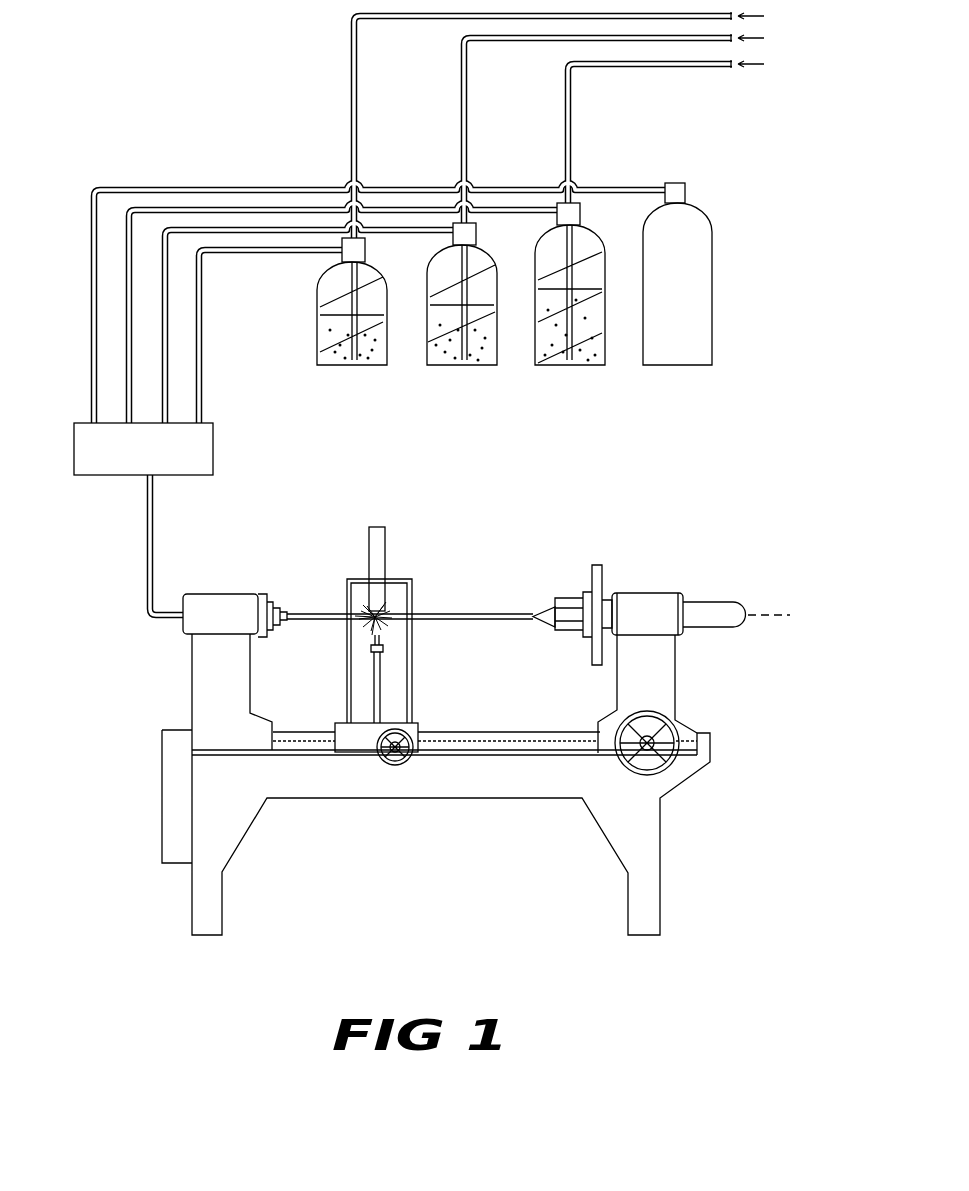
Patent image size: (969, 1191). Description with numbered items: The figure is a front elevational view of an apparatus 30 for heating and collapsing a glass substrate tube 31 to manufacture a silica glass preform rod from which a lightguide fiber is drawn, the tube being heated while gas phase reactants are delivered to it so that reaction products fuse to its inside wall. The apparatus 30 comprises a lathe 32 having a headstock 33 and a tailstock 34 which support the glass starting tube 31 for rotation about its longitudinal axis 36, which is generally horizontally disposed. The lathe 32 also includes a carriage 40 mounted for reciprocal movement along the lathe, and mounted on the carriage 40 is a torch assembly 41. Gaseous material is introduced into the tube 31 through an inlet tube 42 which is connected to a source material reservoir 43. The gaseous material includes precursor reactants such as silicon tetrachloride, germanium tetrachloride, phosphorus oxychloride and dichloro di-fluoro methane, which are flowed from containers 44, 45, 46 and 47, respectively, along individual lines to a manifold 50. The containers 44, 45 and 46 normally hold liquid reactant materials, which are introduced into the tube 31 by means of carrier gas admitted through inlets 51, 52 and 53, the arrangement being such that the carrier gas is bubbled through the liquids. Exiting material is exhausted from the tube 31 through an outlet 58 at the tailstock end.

The apparatus 30 is at (146, 30).
The glass substrate tube 31 is at (462, 613).
The lathe 32 is at (518, 800).
The headstock 33 is at (216, 594).
The tailstock 34 is at (641, 593).
The longitudinal axis 36 is at (763, 620).
The carriage 40 is at (420, 728).
The torch assembly 41 is at (380, 567).
The inlet tube 42 is at (153, 542).
The source material reservoir 43 is at (292, 314).
The container 44 is at (342, 370).
The container 45 is at (452, 374).
The container 46 is at (557, 374).
The container 47 is at (667, 374).
The manifold 50 is at (213, 450).
The inlet 51 is at (356, 128).
The inlet 52 is at (466, 130).
The inlet 53 is at (571, 136).
The outlet 58 is at (706, 600).